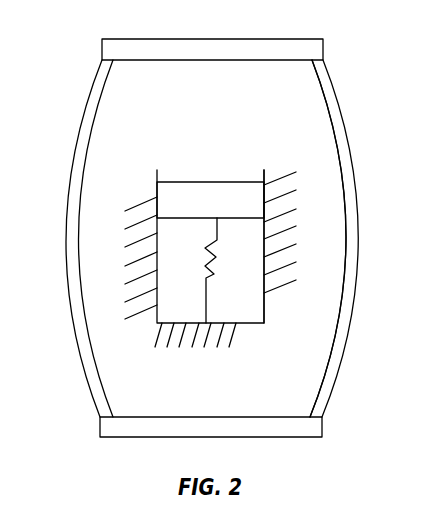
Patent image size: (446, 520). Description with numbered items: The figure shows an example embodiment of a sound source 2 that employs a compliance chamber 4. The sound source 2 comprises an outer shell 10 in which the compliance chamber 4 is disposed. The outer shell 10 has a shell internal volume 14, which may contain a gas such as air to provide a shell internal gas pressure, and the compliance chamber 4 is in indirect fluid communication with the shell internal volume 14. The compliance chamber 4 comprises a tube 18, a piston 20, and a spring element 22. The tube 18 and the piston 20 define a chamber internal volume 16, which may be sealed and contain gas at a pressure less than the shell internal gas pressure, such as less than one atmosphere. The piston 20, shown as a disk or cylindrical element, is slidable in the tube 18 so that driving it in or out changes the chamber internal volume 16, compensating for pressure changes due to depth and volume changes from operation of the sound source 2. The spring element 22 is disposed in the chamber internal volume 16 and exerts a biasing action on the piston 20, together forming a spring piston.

The sound source 2 is at (358, 129).
The compliance chamber 4 is at (297, 188).
The outer shell 10 is at (338, 95).
The shell internal volume 14 is at (145, 125).
The chamber internal volume 16 is at (193, 292).
The tube 18 is at (264, 311).
The piston 20 is at (210, 182).
The spring element 22 is at (212, 268).